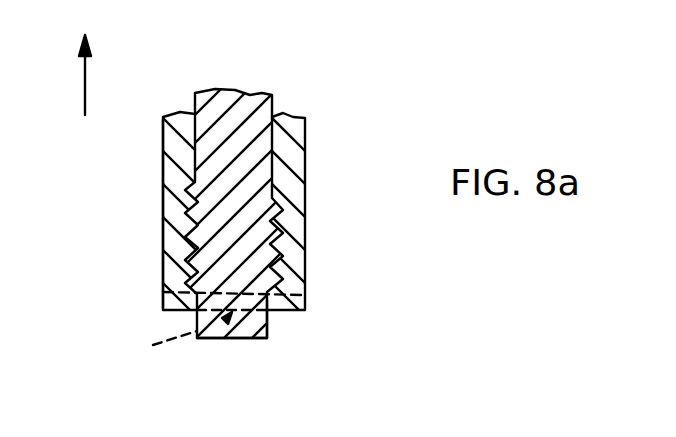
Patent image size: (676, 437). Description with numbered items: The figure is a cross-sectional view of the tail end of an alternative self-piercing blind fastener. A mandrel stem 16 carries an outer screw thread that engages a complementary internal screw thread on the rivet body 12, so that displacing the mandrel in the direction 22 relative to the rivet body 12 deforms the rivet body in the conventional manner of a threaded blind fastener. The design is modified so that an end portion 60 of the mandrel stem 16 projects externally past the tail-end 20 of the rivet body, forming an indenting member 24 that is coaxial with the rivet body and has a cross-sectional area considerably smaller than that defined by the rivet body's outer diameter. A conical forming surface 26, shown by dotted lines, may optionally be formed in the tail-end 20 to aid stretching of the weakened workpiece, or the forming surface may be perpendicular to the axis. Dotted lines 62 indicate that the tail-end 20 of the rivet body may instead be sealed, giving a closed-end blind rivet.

The rivet body 12 is at (296, 231).
The mandrel stem 16 is at (255, 158).
The tail-end of the rivet body 20 is at (168, 250).
The direction of mandrel displacement 22 is at (151, 25).
The indenting member 24 is at (241, 339).
The conical forming surface 26 is at (401, 260).
The end portion of the mandrel stem 60 is at (267, 325).
The dotted lines indicating sealed tail-end 62 is at (147, 354).